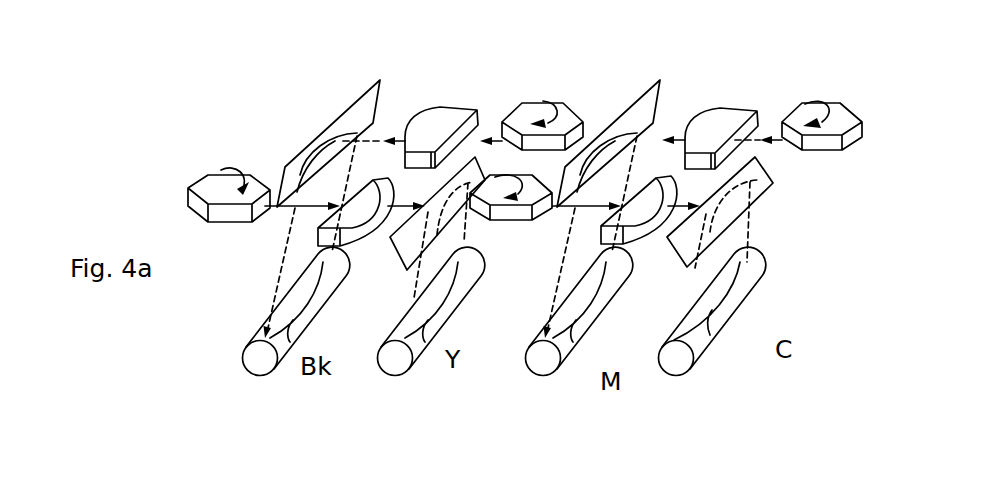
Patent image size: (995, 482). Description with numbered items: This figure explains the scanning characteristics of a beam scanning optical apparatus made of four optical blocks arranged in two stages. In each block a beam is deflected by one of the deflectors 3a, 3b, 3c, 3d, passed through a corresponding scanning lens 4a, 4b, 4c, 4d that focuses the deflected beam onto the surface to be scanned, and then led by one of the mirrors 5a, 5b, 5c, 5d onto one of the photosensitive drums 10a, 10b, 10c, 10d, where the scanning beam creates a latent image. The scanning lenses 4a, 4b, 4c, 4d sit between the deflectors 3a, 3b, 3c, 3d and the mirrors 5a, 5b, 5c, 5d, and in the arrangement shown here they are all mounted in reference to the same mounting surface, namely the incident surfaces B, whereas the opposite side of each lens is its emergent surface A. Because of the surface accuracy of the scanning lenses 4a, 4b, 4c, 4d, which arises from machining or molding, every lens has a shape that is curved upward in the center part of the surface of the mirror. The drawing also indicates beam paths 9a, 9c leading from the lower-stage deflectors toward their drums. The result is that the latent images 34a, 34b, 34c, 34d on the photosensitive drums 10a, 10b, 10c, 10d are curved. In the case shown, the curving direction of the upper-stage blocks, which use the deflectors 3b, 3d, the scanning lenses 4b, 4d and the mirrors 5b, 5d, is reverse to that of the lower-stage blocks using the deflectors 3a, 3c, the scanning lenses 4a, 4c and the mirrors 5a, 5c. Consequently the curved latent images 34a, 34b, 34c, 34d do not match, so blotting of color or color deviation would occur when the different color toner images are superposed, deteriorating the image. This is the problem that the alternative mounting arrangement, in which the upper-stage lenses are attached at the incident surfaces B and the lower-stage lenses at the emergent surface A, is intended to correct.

The deflector 3a is at (201, 187).
The deflector 3b is at (533, 103).
The deflector 3c is at (503, 222).
The deflector 3d is at (830, 122).
The scanning lens 4a is at (388, 112).
The scanning lens 4b is at (443, 107).
The scanning lens 4c is at (664, 135).
The scanning lens 4d is at (723, 108).
The mirror 5a is at (389, 245).
The mirror 5b is at (292, 170).
The mirror 5c is at (767, 183).
The mirror 5d is at (622, 113).
The light beam 9a is at (312, 207).
The light beam 9c is at (592, 207).
The photosensitive drum 10a is at (395, 372).
The photosensitive drum 10b is at (256, 372).
The photosensitive drum 10c is at (677, 365).
The photosensitive drum 10d is at (543, 365).
The curved latent image 34a is at (425, 342).
The curved latent image 34b is at (290, 342).
The curved latent image 34c is at (710, 335).
The curved latent image 34d is at (573, 342).
The emergent surface A is at (362, 241).
The incident surface B is at (427, 168).